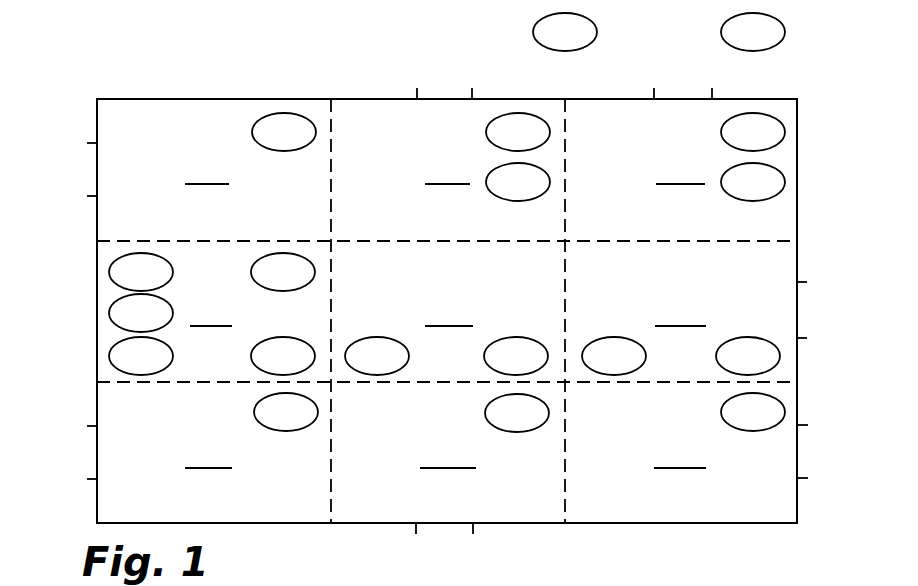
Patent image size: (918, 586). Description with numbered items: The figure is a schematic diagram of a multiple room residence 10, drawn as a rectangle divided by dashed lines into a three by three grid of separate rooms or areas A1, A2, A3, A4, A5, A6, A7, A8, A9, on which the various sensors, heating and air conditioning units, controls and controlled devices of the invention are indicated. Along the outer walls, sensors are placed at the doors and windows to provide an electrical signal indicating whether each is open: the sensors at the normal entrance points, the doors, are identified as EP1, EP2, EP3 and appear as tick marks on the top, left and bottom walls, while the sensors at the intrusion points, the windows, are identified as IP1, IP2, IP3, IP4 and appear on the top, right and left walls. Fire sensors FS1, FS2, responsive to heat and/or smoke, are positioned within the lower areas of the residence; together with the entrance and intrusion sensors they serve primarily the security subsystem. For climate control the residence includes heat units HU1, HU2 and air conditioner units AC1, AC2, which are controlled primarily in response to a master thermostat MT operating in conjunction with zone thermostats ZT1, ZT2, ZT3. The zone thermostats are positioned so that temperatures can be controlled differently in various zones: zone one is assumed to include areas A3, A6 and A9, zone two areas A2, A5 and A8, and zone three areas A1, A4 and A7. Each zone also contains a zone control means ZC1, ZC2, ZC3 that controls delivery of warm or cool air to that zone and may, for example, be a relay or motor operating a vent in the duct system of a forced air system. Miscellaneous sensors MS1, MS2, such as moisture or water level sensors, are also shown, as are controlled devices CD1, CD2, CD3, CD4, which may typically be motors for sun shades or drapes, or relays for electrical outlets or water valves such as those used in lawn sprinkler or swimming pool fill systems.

The residence 10 is at (293, 73).
The area A1 is at (207, 171).
The area A2 is at (447, 171).
The area A3 is at (680, 171).
The area A4 is at (211, 313).
The area A5 is at (449, 313).
The area A6 is at (680, 313).
The area A7 is at (208, 455).
The area A8 is at (448, 455).
The area A9 is at (680, 455).
The controlled device CD1 is at (284, 132).
The controlled device CD2 is at (753, 132).
The controlled device CD3 is at (753, 412).
The controlled device CD4 is at (753, 32).
The miscellaneous sensor MS1 is at (753, 182).
The miscellaneous sensor MS2 is at (565, 32).
The air conditioner unit AC1 is at (518, 132).
The air conditioner unit AC2 is at (141, 272).
The heat unit HU1 is at (518, 182).
The heat unit HU2 is at (141, 313).
The zone control means ZC1 is at (614, 356).
The zone control means ZC2 is at (377, 356).
The zone control means ZC3 is at (141, 356).
The zone thermostat ZT1 is at (748, 356).
The zone thermostat ZT2 is at (516, 356).
The zone thermostat ZT3 is at (283, 356).
The master thermostat MT is at (283, 272).
The fire sensor FS1 is at (286, 412).
The fire sensor FS2 is at (517, 413).
The intrusion point sensor IP1 is at (444, 82).
The intrusion point sensor IP2 is at (821, 310).
The intrusion point sensor IP3 is at (822, 451).
The intrusion point sensor IP4 is at (70, 452).
The entrance point sensor EP1 is at (444, 541).
The entrance point sensor EP2 is at (683, 82).
The entrance point sensor EP3 is at (69, 169).